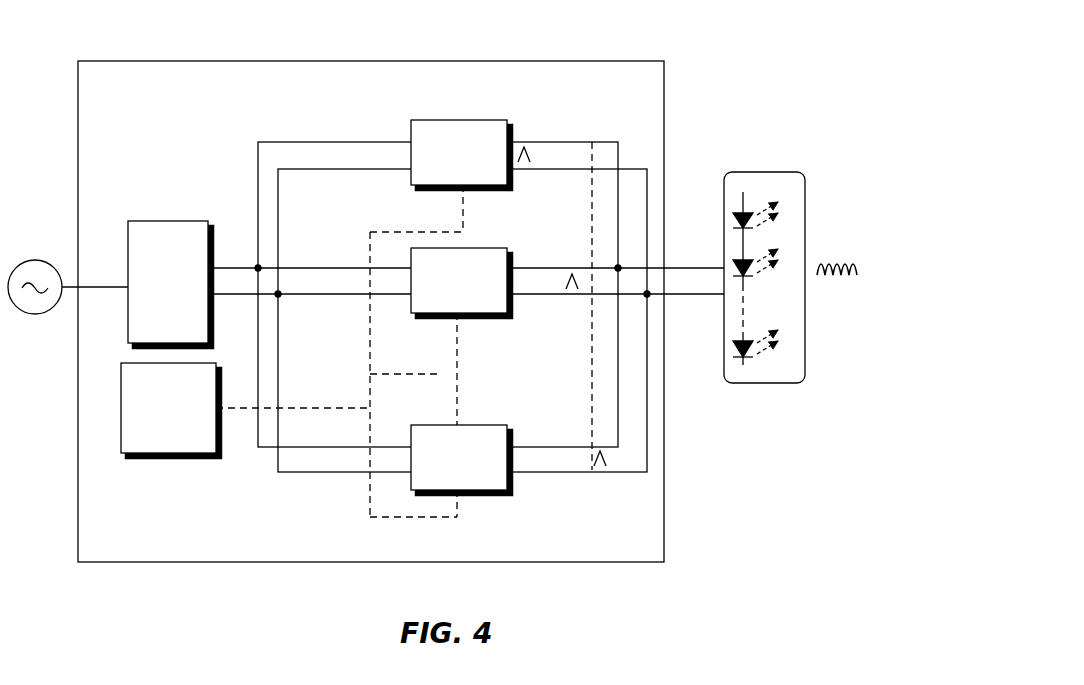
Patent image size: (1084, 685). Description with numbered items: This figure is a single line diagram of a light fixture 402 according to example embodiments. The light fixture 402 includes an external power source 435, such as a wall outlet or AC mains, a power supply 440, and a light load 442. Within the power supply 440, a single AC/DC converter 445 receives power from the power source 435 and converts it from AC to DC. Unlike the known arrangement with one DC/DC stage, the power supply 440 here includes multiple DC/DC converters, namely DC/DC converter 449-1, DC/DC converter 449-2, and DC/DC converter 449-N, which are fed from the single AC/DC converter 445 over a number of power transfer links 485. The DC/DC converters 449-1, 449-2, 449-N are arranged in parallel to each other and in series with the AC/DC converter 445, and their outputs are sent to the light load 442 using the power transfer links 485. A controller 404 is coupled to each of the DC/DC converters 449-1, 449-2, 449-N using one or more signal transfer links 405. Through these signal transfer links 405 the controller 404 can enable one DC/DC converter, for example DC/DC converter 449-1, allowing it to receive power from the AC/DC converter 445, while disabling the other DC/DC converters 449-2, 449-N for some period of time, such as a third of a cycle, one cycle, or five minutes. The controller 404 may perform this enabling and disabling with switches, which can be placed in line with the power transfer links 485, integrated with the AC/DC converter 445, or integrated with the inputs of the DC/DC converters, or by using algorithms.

The light fixture 402 is at (722, 40).
The power supply 440 is at (462, 61).
The external power source 435 is at (28, 316).
The AC/DC converter 445 is at (155, 221).
The controller 404 is at (160, 455).
The signal transfer links 405 is at (370, 345).
The power transfer links 485 is at (345, 169).
The DC/DC converter 449-1 is at (493, 120).
The DC/DC converter 449-2 is at (493, 248).
The DC/DC converter 449-N is at (493, 425).
The light load 442 is at (780, 172).